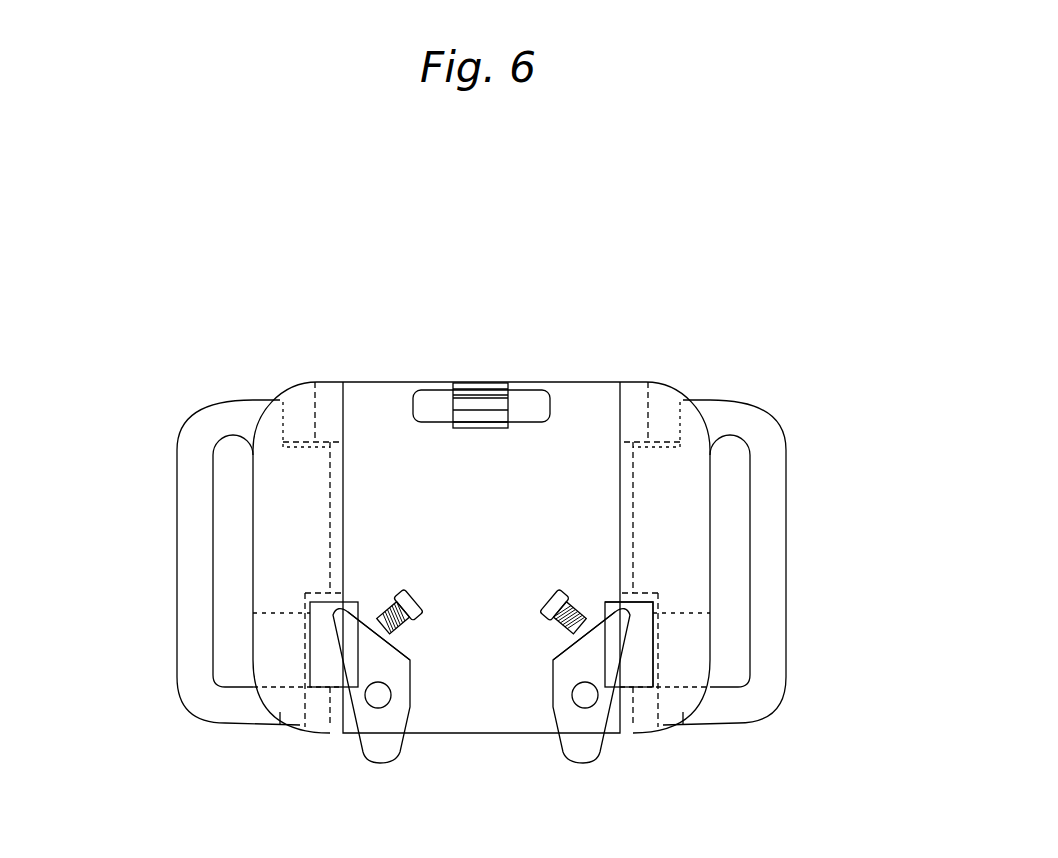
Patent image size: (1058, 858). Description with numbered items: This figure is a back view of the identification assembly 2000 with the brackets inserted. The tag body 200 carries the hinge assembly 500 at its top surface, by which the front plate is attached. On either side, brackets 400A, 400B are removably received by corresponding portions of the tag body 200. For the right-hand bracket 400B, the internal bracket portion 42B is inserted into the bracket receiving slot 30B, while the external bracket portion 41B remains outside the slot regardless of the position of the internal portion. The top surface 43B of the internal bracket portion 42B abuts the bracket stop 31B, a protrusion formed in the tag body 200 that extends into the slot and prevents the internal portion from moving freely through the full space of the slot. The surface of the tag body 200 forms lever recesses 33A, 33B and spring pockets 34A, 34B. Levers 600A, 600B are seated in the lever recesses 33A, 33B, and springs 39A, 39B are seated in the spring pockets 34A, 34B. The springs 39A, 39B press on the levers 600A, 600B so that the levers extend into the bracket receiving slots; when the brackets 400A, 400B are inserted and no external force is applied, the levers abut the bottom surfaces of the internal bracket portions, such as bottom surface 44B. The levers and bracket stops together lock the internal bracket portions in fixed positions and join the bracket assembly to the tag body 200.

The identification assembly 2000 is at (192, 100).
The tag body 200 is at (602, 380).
The hinge assembly 500 is at (482, 397).
The bracket 400A is at (173, 500).
The bracket 400B is at (788, 658).
The external bracket portion 41B is at (777, 482).
The internal bracket portion 42B is at (673, 570).
The top surface 43B is at (655, 440).
The bracket stop 31B is at (637, 438).
The bottom surface 44B is at (680, 617).
The bracket receiving slot 30B is at (640, 656).
The lever recess 33A is at (408, 657).
The lever recess 33B is at (558, 655).
The spring pocket 34A is at (405, 585).
The spring pocket 34B is at (552, 588).
The spring 39A is at (400, 630).
The spring 39B is at (583, 623).
The lever 600A is at (365, 753).
The lever 600B is at (600, 753).